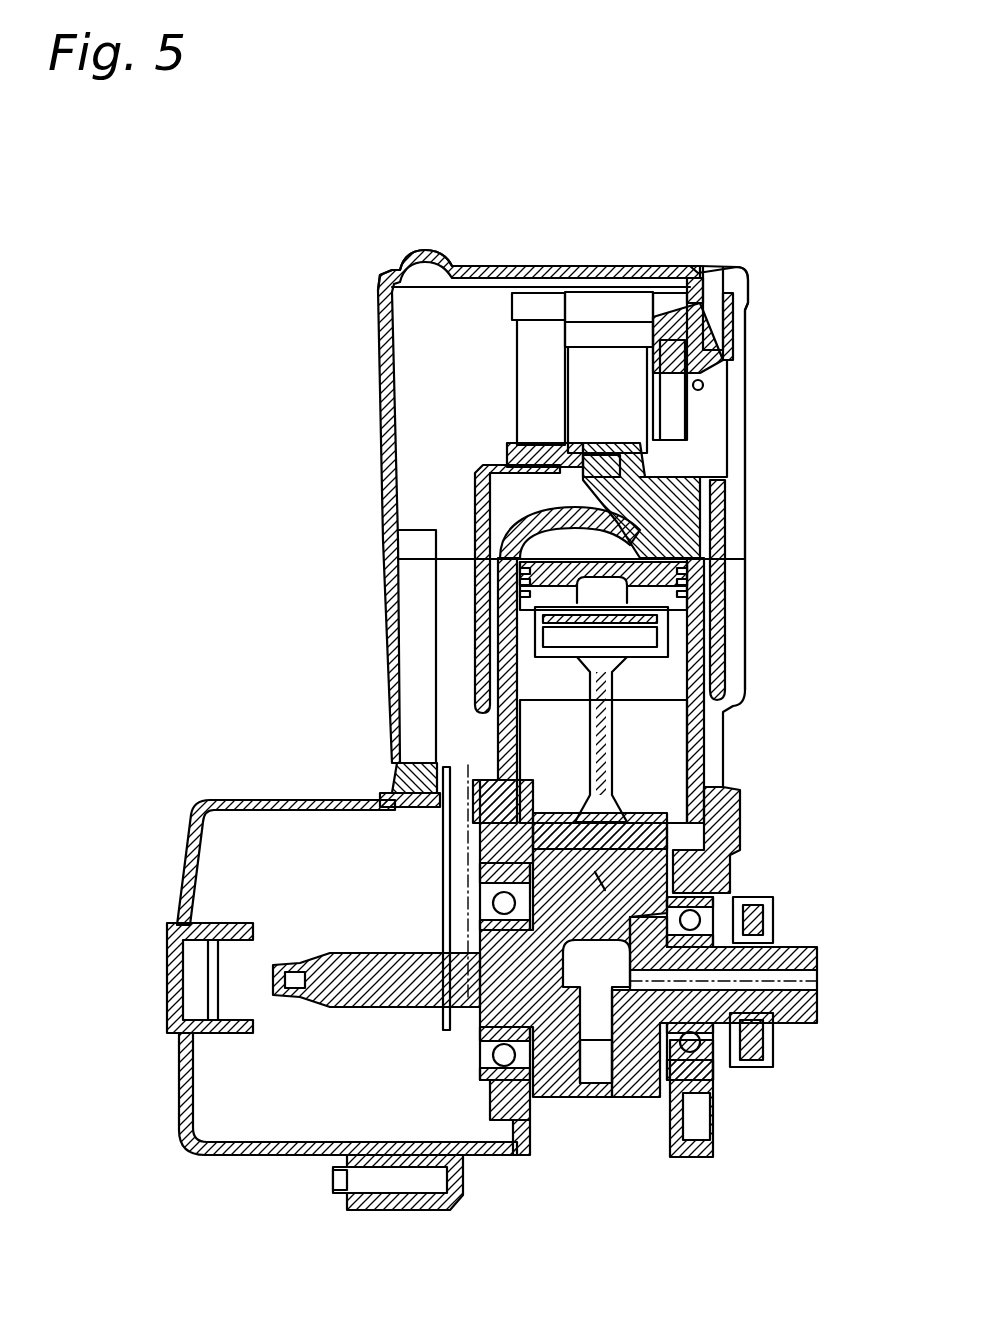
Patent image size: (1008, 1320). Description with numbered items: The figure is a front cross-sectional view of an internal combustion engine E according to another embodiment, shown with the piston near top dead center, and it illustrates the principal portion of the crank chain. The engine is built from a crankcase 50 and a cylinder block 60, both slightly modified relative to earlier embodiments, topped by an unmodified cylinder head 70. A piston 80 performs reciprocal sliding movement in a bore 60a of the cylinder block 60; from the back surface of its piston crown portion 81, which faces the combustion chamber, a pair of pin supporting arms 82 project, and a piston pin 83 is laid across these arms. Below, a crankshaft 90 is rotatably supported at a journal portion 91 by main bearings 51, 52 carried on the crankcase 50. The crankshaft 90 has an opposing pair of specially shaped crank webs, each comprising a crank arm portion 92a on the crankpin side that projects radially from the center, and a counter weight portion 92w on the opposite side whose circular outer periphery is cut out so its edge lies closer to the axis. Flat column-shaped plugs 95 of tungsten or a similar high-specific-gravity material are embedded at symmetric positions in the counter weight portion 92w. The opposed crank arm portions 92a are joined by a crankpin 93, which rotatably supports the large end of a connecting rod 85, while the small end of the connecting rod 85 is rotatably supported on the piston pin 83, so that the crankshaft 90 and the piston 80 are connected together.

The internal combustion engine E is at (292, 274).
The cylinder head 70 is at (372, 410).
The cylinder block 60 is at (372, 660).
The bore 60a is at (650, 760).
The piston crown portion 81 is at (742, 536).
The piston 80 is at (690, 579).
The pin supporting arms 82 is at (670, 608).
The piston pin 83 is at (662, 629).
The connecting rod 85 is at (592, 778).
The crank arm portion 92a is at (575, 826).
The counter weight portion 92w is at (557, 1098).
The crankpin 93 is at (640, 882).
The plugs 95 is at (592, 1086).
The journal portion 91 is at (762, 1004).
The crankshaft 90 is at (422, 955).
The crankcase 50 is at (480, 840).
The main bearing 51 is at (490, 1053).
The main bearing 52 is at (714, 1066).